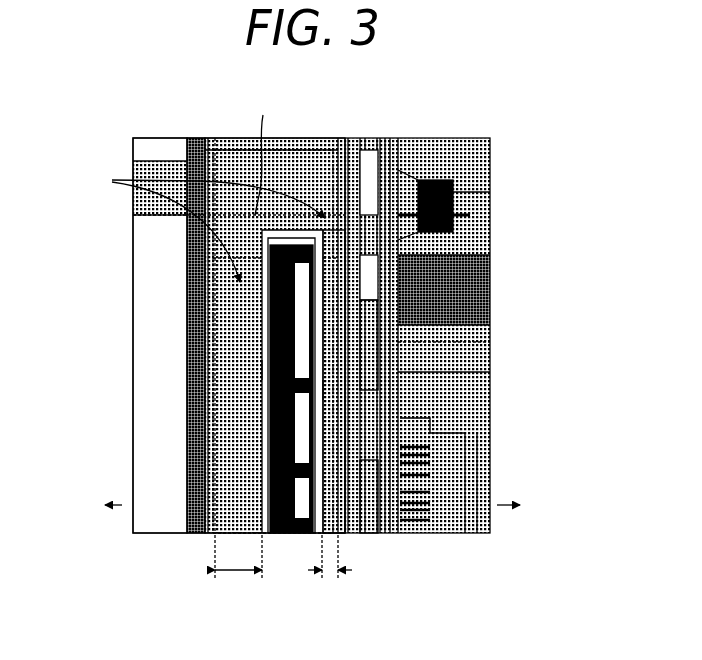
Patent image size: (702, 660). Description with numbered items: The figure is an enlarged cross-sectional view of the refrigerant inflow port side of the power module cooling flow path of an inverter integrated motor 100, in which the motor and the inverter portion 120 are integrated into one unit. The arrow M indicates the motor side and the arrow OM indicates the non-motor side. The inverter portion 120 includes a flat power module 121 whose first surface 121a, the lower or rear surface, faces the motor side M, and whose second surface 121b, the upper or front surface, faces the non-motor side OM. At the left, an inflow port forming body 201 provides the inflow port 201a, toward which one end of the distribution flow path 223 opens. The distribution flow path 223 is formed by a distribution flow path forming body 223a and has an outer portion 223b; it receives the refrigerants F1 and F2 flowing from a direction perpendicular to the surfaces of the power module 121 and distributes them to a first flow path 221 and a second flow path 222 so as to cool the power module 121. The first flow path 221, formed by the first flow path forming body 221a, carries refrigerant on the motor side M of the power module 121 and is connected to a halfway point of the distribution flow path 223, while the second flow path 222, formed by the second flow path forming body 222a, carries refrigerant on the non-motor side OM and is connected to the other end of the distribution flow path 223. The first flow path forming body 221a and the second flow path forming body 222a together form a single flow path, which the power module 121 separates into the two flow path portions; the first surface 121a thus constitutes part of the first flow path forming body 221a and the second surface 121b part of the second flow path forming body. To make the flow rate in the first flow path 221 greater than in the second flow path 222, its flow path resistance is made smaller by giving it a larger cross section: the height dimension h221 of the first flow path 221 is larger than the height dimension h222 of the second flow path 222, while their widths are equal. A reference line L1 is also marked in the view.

The inverter integrated motor 100 is at (478, 108).
The inverter portion 120 is at (490, 270).
The power module 121 is at (290, 536).
The first surface 121a is at (262, 372).
The second surface 121b is at (330, 392).
The inflow port forming body 201 is at (160, 138).
The inflow port 201a is at (140, 200).
The first flow path 221 is at (175, 535).
The first flow path forming body 221a is at (213, 535).
The second flow path 222 is at (372, 534).
The second flow path forming body 222a is at (343, 535).
The distribution flow path 223 is at (290, 165).
The distribution flow path forming body 223a is at (230, 148).
The outer portion 223b is at (313, 148).
The height dimension of the first flow path h221 is at (238, 567).
The height dimension of the second flow path h222 is at (330, 567).
The reference line L1 is at (264, 157).
The refrigerant F1 is at (181, 245).
The refrigerant F2 is at (218, 199).
The motor side M is at (104, 506).
The non-motor side OM is at (523, 506).